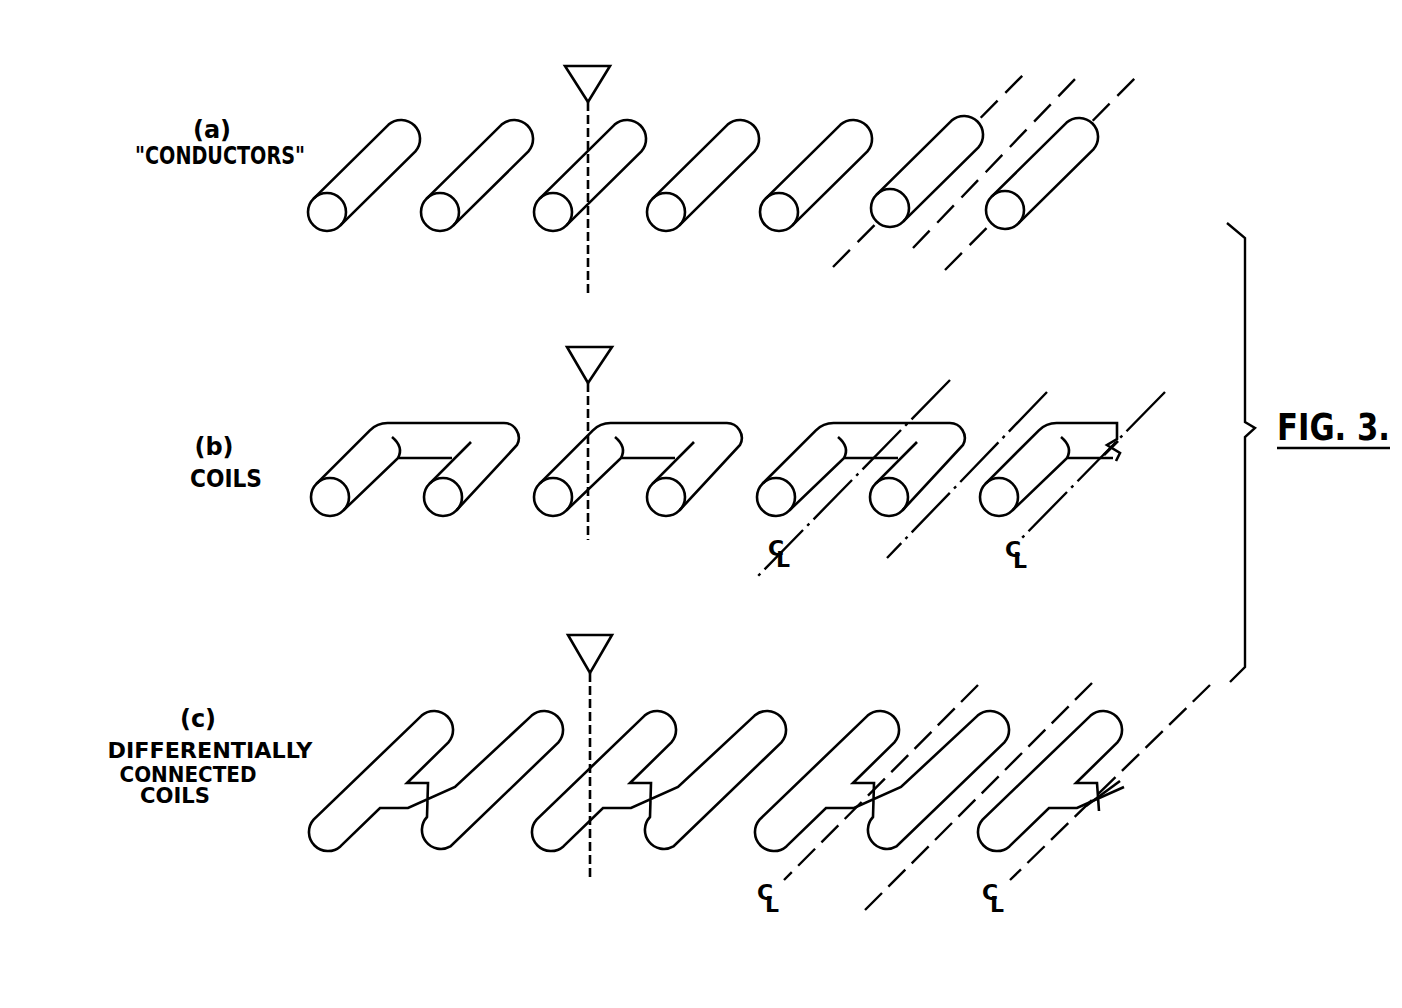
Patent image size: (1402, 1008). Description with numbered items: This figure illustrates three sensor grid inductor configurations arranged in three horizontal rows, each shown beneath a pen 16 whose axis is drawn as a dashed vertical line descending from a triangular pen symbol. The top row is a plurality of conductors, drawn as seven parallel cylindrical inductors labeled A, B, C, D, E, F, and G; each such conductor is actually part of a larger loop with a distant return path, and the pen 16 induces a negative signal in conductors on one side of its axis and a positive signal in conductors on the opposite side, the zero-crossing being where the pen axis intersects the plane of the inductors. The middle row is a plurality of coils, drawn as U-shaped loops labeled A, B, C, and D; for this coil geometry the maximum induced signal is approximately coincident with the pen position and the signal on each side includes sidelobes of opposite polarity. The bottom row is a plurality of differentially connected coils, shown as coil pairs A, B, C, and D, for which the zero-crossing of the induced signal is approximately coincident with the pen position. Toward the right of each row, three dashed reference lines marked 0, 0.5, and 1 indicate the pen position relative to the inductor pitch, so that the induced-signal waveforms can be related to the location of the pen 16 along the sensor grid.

The pen 16 is at (607, 73).
The pen position 0 reference line 0 is at (895, 465).
The pen position 0.5 reference line 0.5 is at (995, 480).
The pen position 1 reference line 1 is at (1081, 465).
The conductor / coil A is at (435, 497).
The conductor / coil B is at (603, 497).
The conductor / coil C is at (771, 497).
The conductor / coil D is at (885, 497).
The conductor E is at (816, 175).
The conductor F is at (927, 171).
The conductor G is at (1042, 173).